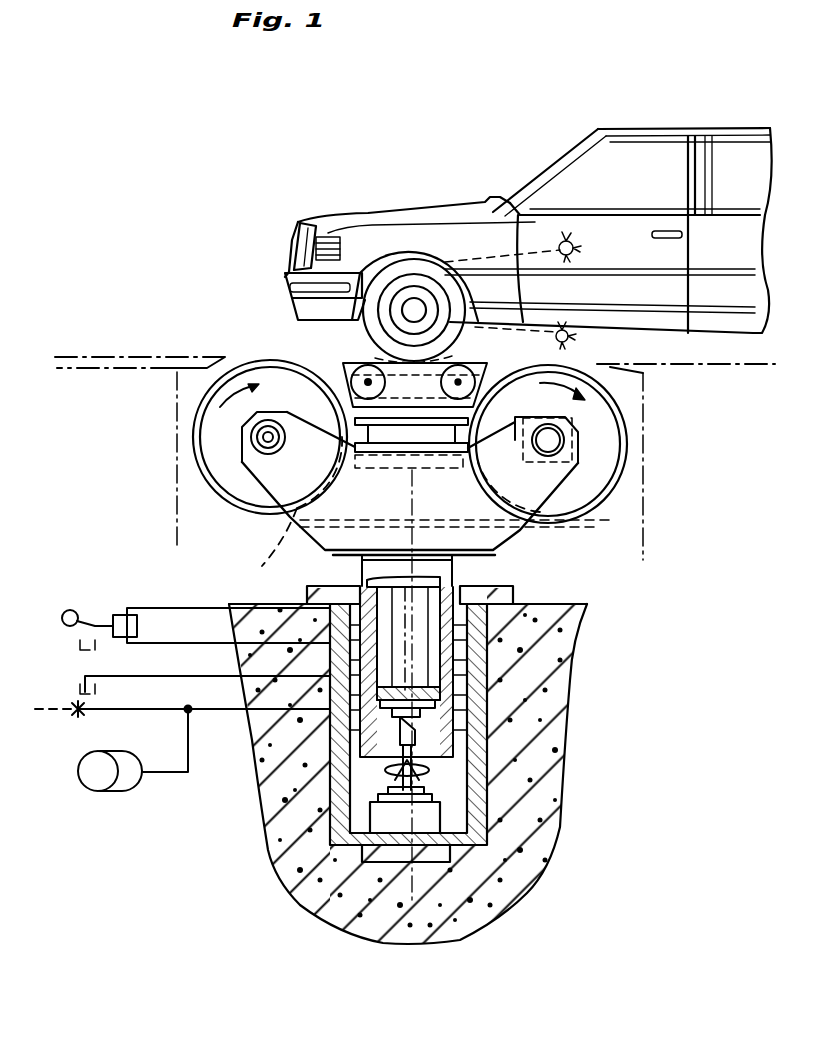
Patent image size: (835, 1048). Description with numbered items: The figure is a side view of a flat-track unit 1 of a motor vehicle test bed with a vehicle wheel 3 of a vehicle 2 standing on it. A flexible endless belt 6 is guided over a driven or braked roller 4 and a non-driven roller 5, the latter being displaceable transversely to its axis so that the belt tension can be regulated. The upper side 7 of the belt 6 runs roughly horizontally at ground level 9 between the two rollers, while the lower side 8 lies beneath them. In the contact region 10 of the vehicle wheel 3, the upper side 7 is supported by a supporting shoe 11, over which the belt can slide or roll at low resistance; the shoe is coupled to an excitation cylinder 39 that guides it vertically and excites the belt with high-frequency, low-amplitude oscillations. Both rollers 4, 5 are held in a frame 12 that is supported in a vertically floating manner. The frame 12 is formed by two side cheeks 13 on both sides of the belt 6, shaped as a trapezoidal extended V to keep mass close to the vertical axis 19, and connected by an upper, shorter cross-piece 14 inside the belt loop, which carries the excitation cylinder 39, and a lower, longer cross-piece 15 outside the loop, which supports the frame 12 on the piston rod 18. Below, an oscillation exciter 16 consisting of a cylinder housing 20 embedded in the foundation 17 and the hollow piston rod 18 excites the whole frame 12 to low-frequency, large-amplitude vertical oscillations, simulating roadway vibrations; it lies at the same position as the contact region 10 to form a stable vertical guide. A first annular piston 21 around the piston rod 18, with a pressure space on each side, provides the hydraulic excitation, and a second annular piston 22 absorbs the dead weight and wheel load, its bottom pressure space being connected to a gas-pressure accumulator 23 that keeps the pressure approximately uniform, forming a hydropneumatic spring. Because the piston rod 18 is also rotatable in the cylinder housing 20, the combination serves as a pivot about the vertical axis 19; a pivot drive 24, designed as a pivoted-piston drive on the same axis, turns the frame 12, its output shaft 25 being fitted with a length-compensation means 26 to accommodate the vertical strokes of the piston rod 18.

The flat-track unit 1 is at (236, 352).
The vehicle 2 is at (451, 222).
The vehicle wheel 3 is at (393, 279).
The driven or braked roller 4 is at (215, 428).
The non-driven roller 5 is at (603, 447).
The flexible endless belt 6 is at (525, 354).
The upper side of the belt 7 is at (302, 352).
The lower side of the belt 8 is at (271, 547).
The ground level 9 is at (178, 349).
The contact region 10 is at (392, 357).
The supporting shoe 11 is at (457, 358).
The frame 12 is at (282, 531).
The side cheeks 13 is at (258, 466).
The upper cross-piece 14 is at (415, 470).
The lower cross-piece 15 is at (340, 562).
The oscillation exciter 16 is at (500, 585).
The foundation 17 is at (583, 603).
The piston rod 18 is at (500, 520).
The vertical axis 19 is at (406, 852).
The cylinder housing 20 is at (478, 752).
The first annular piston 21 is at (503, 615).
The second annular piston 22 is at (468, 697).
The gas-pressure accumulator 23 is at (102, 778).
The pivot drive 24 is at (385, 828).
The output shaft 25 is at (398, 740).
The length-compensation means 26 is at (393, 780).
The excitation cylinder 39 is at (340, 424).